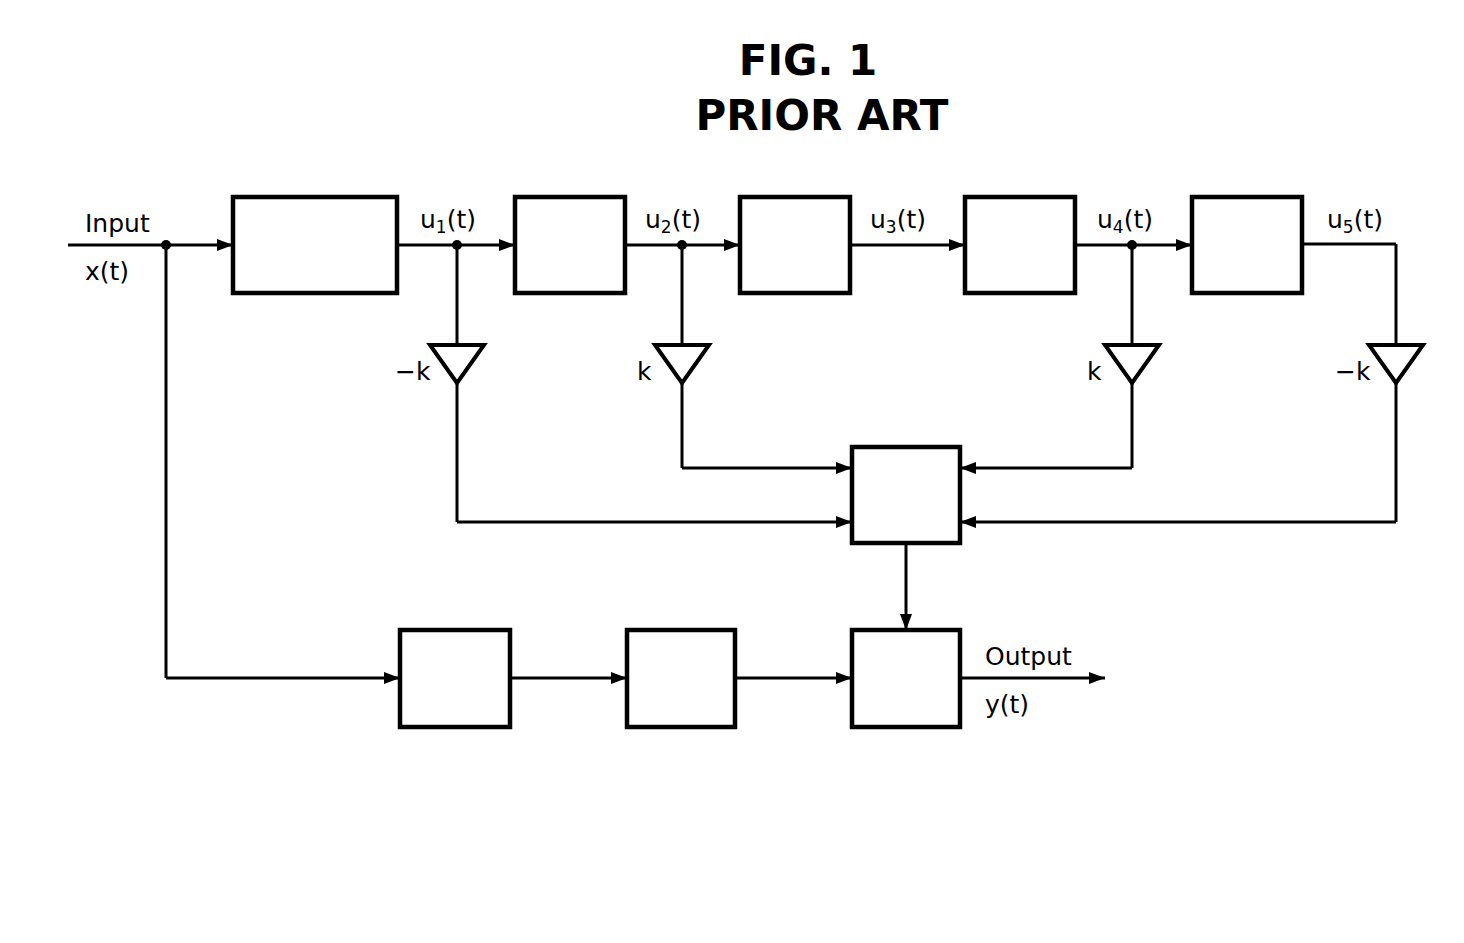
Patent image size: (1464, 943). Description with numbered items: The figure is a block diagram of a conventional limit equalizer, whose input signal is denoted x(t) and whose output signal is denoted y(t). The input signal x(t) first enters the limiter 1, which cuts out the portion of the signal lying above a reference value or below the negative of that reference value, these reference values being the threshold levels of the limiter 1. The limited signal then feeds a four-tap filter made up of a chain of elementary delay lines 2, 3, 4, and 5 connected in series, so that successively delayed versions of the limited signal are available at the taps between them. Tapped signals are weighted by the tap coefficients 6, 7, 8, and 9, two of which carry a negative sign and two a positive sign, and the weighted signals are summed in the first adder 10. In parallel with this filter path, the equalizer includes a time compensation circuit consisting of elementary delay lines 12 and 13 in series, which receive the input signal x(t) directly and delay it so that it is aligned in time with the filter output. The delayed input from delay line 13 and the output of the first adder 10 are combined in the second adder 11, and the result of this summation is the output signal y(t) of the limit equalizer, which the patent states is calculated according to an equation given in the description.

The limiter 1 is at (323, 195).
The elementary delay line 2 is at (573, 195).
The elementary delay line 3 is at (798, 195).
The elementary delay line 4 is at (1023, 195).
The elementary delay line 5 is at (1250, 195).
The tap coefficient 6 is at (468, 363).
The tap coefficient 7 is at (693, 363).
The tap coefficient 8 is at (1143, 363).
The tap coefficient 9 is at (1407, 363).
The first adder 10 is at (928, 445).
The second adder 11 is at (928, 628).
The elementary delay line 12 is at (438, 628).
The elementary delay line 13 is at (663, 628).